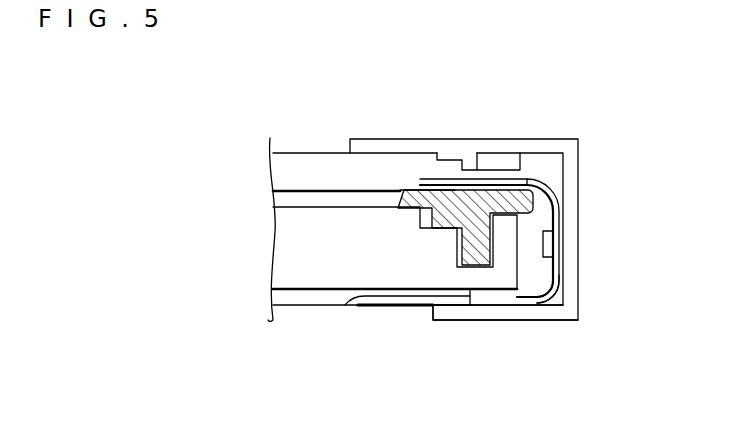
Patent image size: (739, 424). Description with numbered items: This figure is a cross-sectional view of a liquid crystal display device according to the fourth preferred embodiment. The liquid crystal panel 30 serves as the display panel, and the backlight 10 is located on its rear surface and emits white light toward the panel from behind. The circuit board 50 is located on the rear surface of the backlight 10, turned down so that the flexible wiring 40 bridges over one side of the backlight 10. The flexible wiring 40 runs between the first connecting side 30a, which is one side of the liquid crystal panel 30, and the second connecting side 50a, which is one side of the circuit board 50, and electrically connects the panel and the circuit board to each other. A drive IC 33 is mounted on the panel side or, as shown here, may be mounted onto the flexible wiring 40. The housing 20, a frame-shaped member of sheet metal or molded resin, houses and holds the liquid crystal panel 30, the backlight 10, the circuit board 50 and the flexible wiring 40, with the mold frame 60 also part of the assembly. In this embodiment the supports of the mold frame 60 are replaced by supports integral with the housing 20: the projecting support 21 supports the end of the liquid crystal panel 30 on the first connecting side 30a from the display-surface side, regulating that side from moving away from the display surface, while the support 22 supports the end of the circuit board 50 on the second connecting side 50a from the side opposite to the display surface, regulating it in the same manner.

The backlight 10 is at (303, 246).
The housing 20 is at (578, 159).
The support 21 is at (497, 158).
The support 22 is at (500, 312).
The liquid crystal panel 30 is at (300, 170).
The first connecting side 30a is at (420, 180).
The drive IC 33 is at (550, 245).
The flexible wiring 40 is at (553, 293).
The circuit board 50 is at (317, 295).
The second connecting side 50a is at (350, 305).
The mold frame 60 is at (470, 229).